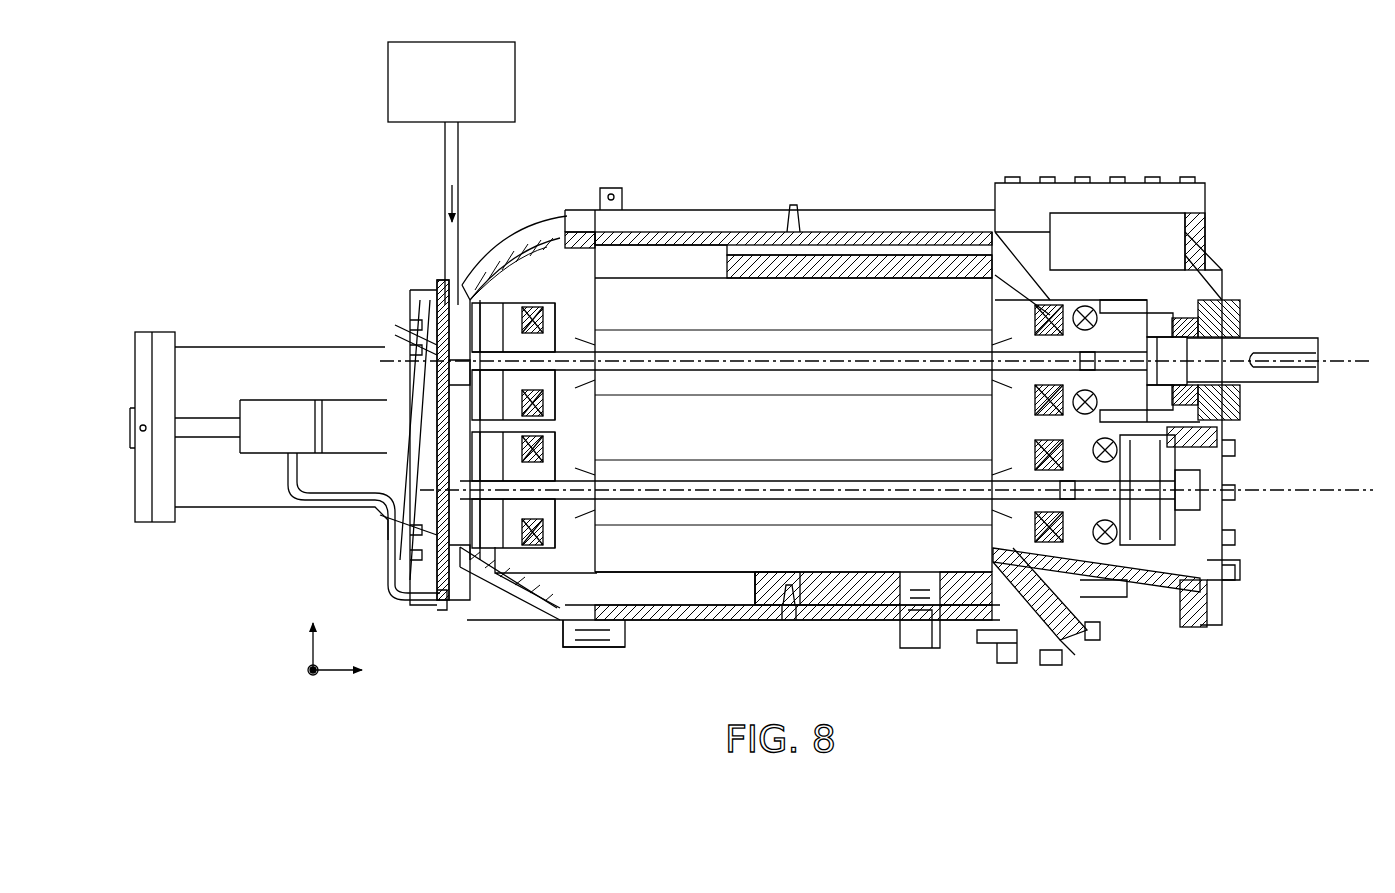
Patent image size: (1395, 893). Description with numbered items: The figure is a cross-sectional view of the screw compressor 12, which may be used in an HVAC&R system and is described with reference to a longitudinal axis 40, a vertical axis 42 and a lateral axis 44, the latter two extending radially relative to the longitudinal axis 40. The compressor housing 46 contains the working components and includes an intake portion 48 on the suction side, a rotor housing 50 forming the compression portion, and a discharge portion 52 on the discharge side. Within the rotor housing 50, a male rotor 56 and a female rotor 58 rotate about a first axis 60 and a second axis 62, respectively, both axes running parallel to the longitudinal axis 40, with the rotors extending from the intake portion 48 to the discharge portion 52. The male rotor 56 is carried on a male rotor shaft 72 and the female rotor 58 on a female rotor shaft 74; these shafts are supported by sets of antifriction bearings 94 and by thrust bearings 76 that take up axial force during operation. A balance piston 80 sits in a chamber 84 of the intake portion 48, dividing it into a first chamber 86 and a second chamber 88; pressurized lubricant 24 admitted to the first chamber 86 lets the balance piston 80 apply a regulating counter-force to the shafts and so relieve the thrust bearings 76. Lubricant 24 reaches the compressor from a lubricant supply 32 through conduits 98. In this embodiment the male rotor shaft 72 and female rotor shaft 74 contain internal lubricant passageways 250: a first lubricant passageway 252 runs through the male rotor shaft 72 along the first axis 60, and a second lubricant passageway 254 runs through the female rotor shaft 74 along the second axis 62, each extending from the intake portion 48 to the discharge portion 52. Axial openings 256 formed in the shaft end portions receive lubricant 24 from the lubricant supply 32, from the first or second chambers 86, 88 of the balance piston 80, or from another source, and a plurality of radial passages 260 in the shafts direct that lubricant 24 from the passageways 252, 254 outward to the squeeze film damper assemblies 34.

The compressor 12 is at (1170, 76).
The lubricant 24 is at (447, 194).
The lubricant supply 32 is at (515, 80).
The squeeze film damper assemblies 34 is at (575, 310).
The longitudinal axis 40 is at (330, 672).
The vertical axis 42 is at (313, 676).
The lateral axis 44 is at (315, 652).
The compressor housing 46 is at (802, 205).
The intake portion 48 is at (562, 612).
The rotor housing 50 is at (788, 612).
The discharge portion 52 is at (1152, 580).
The male rotor 56 is at (878, 300).
The female rotor 58 is at (833, 548).
The first axis 60 is at (1350, 357).
The second axis 62 is at (1350, 487).
The male rotor shaft 72 is at (519, 330).
The female rotor shaft 74 is at (1160, 505).
The thrust bearings 76 is at (1090, 308).
The balance piston 80 is at (440, 420).
The chamber 84 is at (410, 455).
The first chamber 86 is at (468, 350).
The second chamber 88 is at (508, 325).
The bearings 94 is at (548, 300).
The conduits 98 is at (444, 158).
The internal lubricant passageways 250 is at (700, 345).
The first lubricant passageway 252 is at (1087, 361).
The second lubricant passageway 254 is at (1067, 490).
The axial openings 256 is at (425, 335).
The radial passages 260 is at (583, 343).